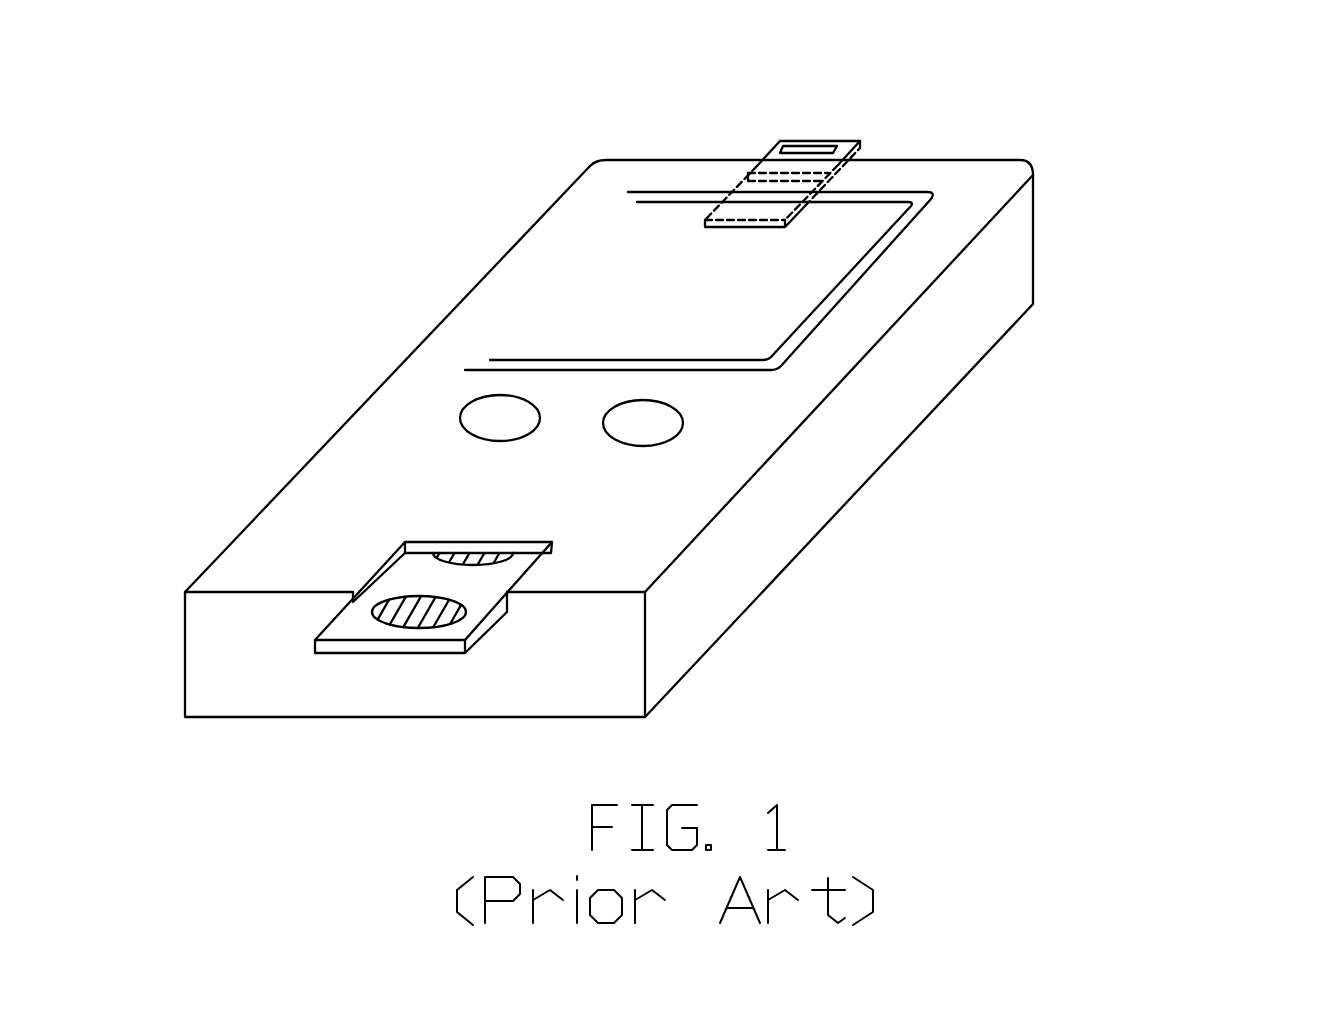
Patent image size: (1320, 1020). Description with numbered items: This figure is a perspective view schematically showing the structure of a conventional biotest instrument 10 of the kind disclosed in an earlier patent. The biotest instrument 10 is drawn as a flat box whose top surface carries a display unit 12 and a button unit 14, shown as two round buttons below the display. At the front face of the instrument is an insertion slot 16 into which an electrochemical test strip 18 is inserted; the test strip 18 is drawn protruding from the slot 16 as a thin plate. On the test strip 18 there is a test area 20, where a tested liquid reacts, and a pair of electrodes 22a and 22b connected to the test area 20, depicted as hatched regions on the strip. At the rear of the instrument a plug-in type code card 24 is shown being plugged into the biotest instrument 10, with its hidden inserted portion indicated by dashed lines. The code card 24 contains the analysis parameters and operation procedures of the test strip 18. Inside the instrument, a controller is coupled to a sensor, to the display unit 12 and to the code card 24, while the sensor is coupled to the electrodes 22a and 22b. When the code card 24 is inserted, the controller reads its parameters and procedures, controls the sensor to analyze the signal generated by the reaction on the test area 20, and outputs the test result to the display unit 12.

The biotest instrument 10 is at (1058, 233).
The display unit 12 is at (577, 262).
The button unit 14 is at (465, 412).
The insertion slot 16 is at (433, 542).
The electrochemical test strip 18 is at (467, 651).
The test area 20 is at (424, 599).
The electrode 22a is at (390, 618).
The electrode 22b is at (443, 613).
The plug-in type code card 24 is at (853, 142).